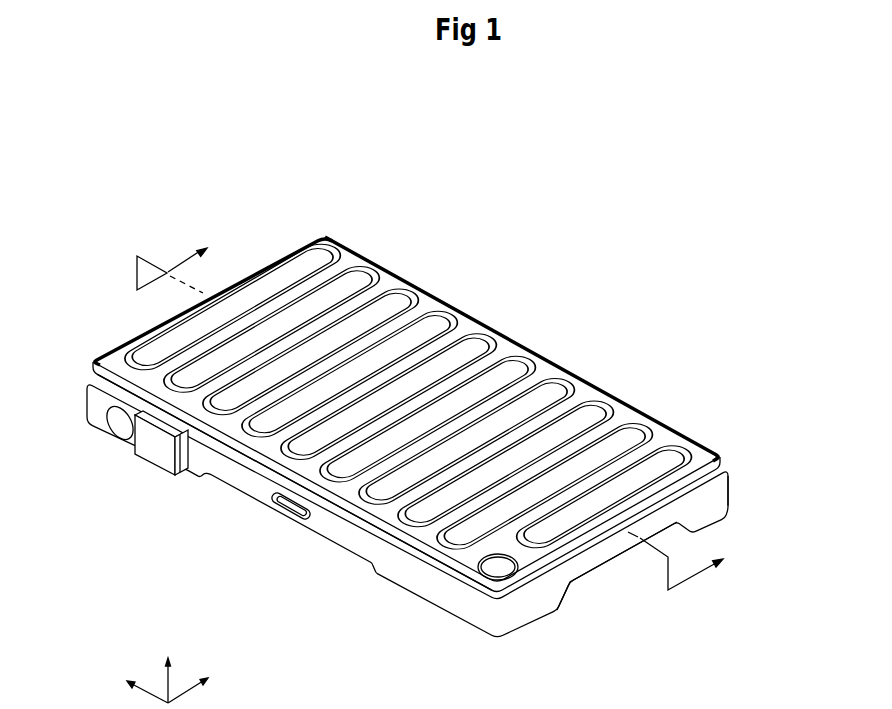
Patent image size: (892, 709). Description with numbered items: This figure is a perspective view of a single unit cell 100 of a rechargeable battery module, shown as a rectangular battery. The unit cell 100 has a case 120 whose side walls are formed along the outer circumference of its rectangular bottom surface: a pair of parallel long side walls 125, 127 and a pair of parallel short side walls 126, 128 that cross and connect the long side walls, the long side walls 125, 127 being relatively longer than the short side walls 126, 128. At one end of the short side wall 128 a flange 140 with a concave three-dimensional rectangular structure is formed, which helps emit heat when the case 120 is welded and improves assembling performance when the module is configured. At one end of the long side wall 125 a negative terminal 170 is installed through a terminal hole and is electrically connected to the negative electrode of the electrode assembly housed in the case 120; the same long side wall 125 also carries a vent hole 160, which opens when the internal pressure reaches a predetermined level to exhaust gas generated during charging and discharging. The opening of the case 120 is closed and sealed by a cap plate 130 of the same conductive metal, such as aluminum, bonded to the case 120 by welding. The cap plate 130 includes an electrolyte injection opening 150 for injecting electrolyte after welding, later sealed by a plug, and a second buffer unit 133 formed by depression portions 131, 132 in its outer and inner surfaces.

The unit cell 100 is at (452, 124).
The case 120 is at (546, 616).
The long side wall 125 is at (372, 536).
The short side wall 126 is at (132, 337).
The long side wall 127 is at (622, 398).
The short side wall 128 is at (726, 483).
The cap plate 130 is at (435, 425).
The depression portion 131 is at (402, 302).
The depression portion 132 is at (368, 298).
The second buffer unit 133 is at (408, 373).
The flange 140 is at (606, 573).
The electrolyte injection opening 150 is at (490, 567).
The vent hole 160 is at (293, 513).
The negative terminal 170 is at (130, 448).